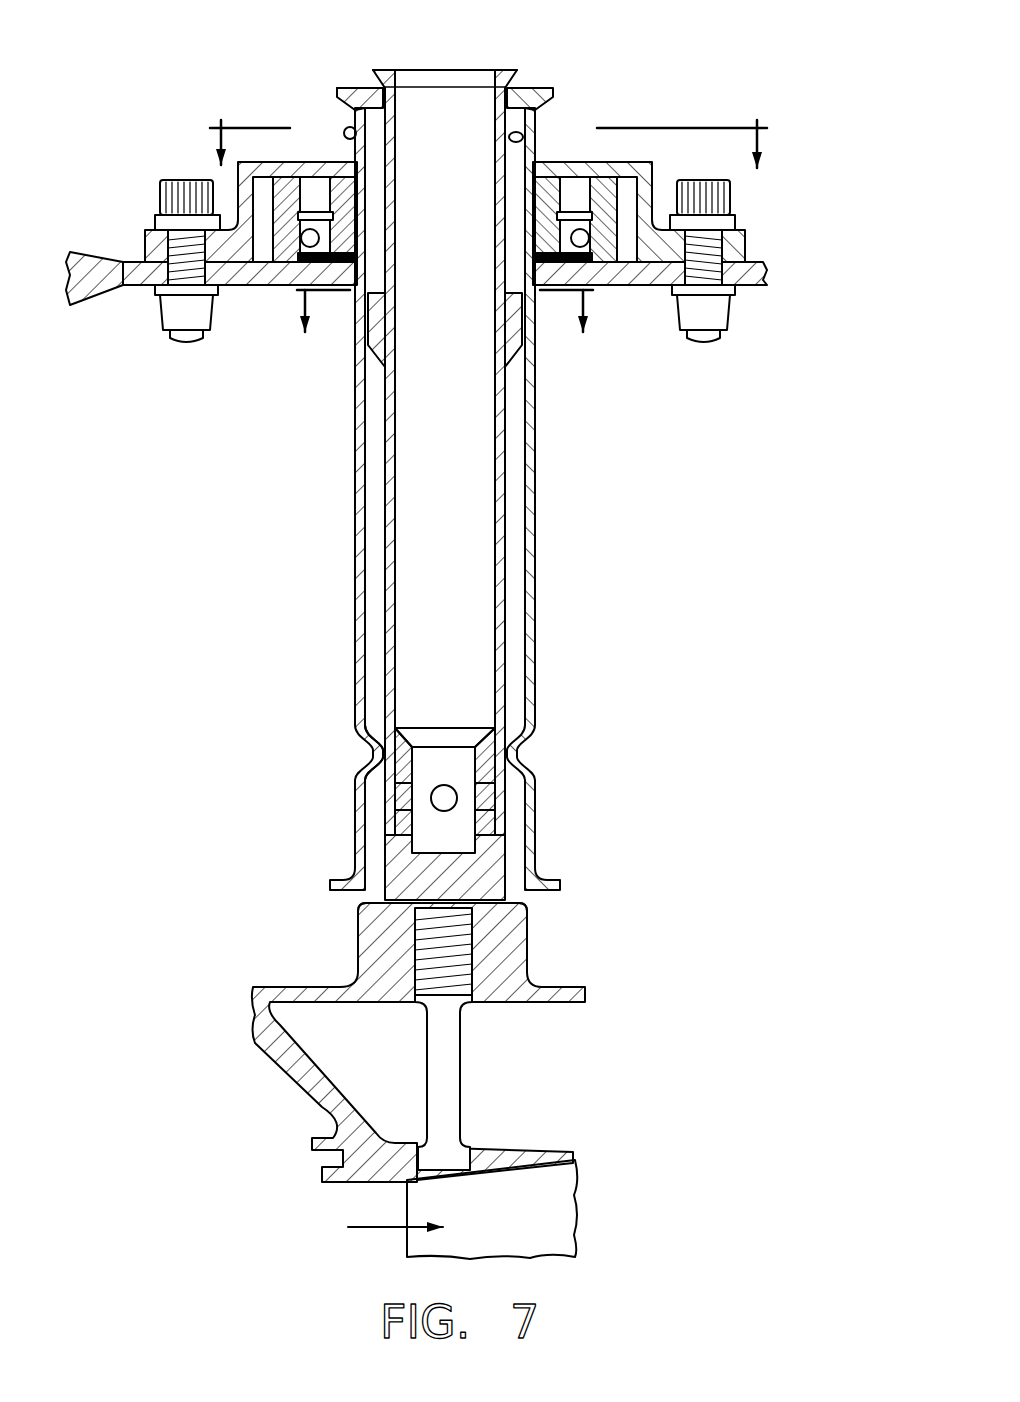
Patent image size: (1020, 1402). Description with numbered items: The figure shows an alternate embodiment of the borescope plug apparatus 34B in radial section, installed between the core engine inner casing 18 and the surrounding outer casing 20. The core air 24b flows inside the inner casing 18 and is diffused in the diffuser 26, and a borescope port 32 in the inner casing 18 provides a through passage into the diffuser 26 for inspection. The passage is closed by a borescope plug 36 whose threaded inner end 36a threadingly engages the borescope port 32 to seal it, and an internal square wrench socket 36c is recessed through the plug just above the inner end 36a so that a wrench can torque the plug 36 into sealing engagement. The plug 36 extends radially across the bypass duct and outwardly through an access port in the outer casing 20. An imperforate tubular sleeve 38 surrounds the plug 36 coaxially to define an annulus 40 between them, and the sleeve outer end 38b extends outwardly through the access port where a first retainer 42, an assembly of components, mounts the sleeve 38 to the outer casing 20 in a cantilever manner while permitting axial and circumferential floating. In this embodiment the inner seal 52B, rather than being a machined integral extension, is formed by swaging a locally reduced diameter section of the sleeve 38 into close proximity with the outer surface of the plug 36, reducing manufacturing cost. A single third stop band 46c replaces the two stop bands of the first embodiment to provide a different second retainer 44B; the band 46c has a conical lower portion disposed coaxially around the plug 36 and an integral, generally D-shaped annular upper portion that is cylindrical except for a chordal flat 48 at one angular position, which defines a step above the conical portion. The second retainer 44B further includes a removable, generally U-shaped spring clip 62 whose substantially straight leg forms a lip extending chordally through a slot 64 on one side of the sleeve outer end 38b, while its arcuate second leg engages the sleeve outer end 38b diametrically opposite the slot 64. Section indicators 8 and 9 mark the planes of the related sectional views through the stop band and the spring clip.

The borescope plug apparatus 34B is at (752, 35).
The second retainer 44B is at (572, 66).
The sleeve outer end 38b is at (555, 103).
The spring clip 62 is at (346, 128).
The slot 64 is at (524, 137).
The first retainer 42 is at (660, 162).
The outer casing 20 is at (762, 272).
The section line 9- 9 is at (489, 125).
The section line 8- 8 is at (444, 332).
The third stop band 46c is at (380, 345).
The chordal flat 48 is at (518, 312).
The borescope plug 36 is at (510, 500).
The tubular sleeve 38 is at (538, 573).
The annulus 40 is at (375, 573).
The wrench socket 36c is at (412, 772).
The inner seal 52B is at (378, 757).
The borescope port 32 is at (529, 948).
The inner casing 18 is at (567, 990).
The threaded inner end 36a is at (430, 965).
The diffuser 26 is at (522, 1224).
The core air 24b is at (372, 1230).